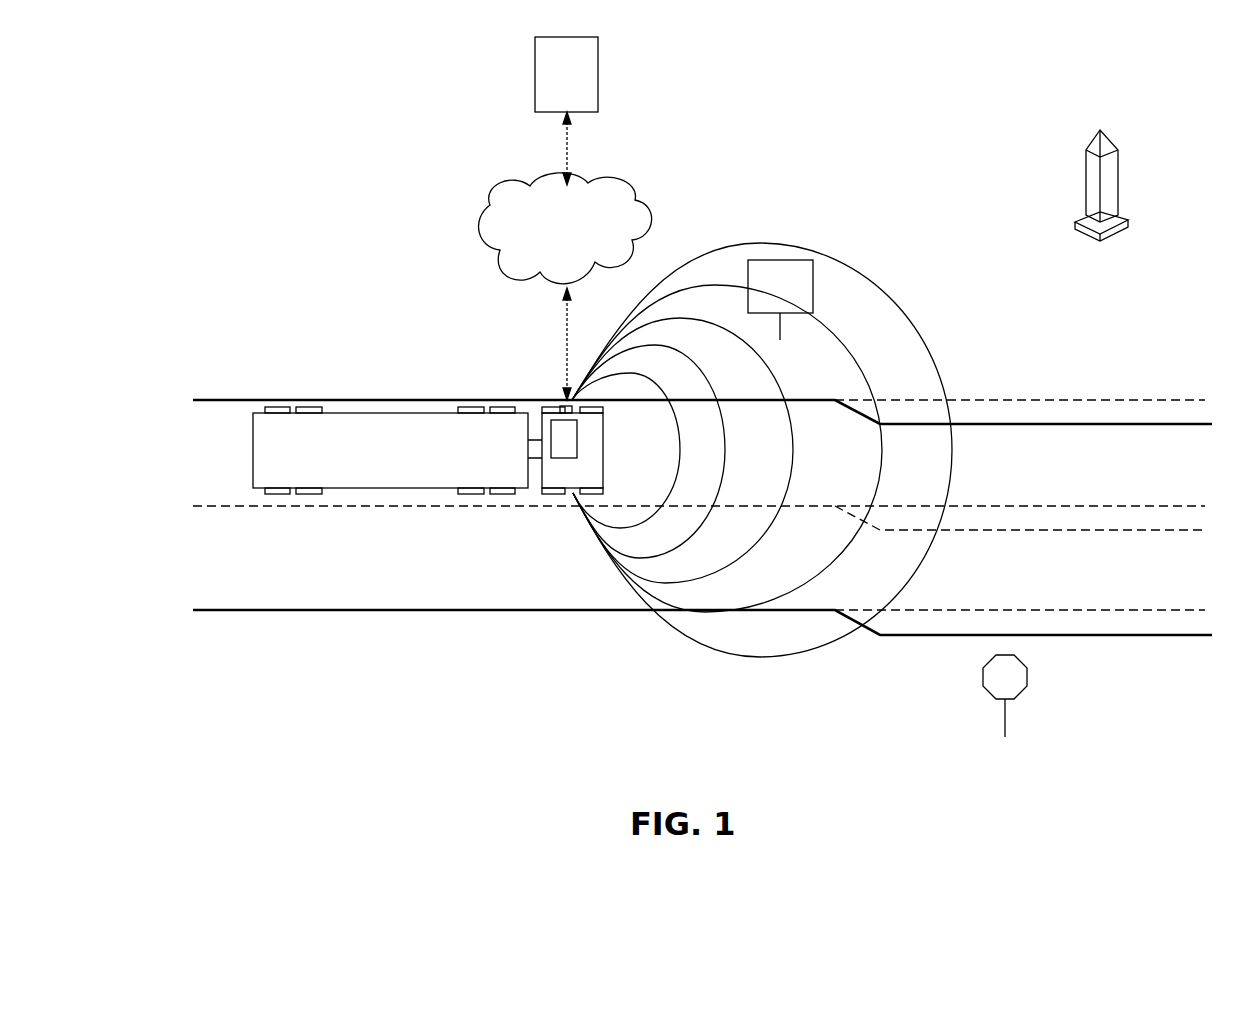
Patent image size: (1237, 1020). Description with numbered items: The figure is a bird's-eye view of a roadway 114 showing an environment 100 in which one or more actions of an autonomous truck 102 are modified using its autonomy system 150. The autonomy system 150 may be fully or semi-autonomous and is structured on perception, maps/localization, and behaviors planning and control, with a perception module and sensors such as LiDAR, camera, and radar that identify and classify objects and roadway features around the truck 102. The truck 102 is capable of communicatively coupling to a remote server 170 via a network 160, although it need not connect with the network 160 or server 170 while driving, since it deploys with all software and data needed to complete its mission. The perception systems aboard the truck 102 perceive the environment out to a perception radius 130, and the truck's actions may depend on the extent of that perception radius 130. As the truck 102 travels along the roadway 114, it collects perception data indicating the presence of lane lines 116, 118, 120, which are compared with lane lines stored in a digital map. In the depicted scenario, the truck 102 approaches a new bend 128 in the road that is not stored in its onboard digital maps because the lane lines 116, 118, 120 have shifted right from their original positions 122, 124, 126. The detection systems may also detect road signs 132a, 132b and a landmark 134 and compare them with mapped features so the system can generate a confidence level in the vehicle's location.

The environment 100 is at (270, 248).
The autonomous truck 102 is at (392, 462).
The roadway 114 is at (998, 270).
The lane line 116 is at (1144, 420).
The lane line 118 is at (1148, 526).
The lane line 120 is at (1150, 632).
The original position of lane line 122 is at (1075, 399).
The original position of lane line 124 is at (1078, 505).
The original position of lane line 126 is at (1078, 609).
The bend 128 is at (891, 356).
The perception radius 130 is at (647, 620).
The road sign 132a is at (814, 290).
The road sign 132b is at (1028, 674).
The landmark 134 is at (1120, 182).
The autonomy system 150 is at (560, 410).
The network 160 is at (565, 228).
The remote server 170 is at (566, 74).